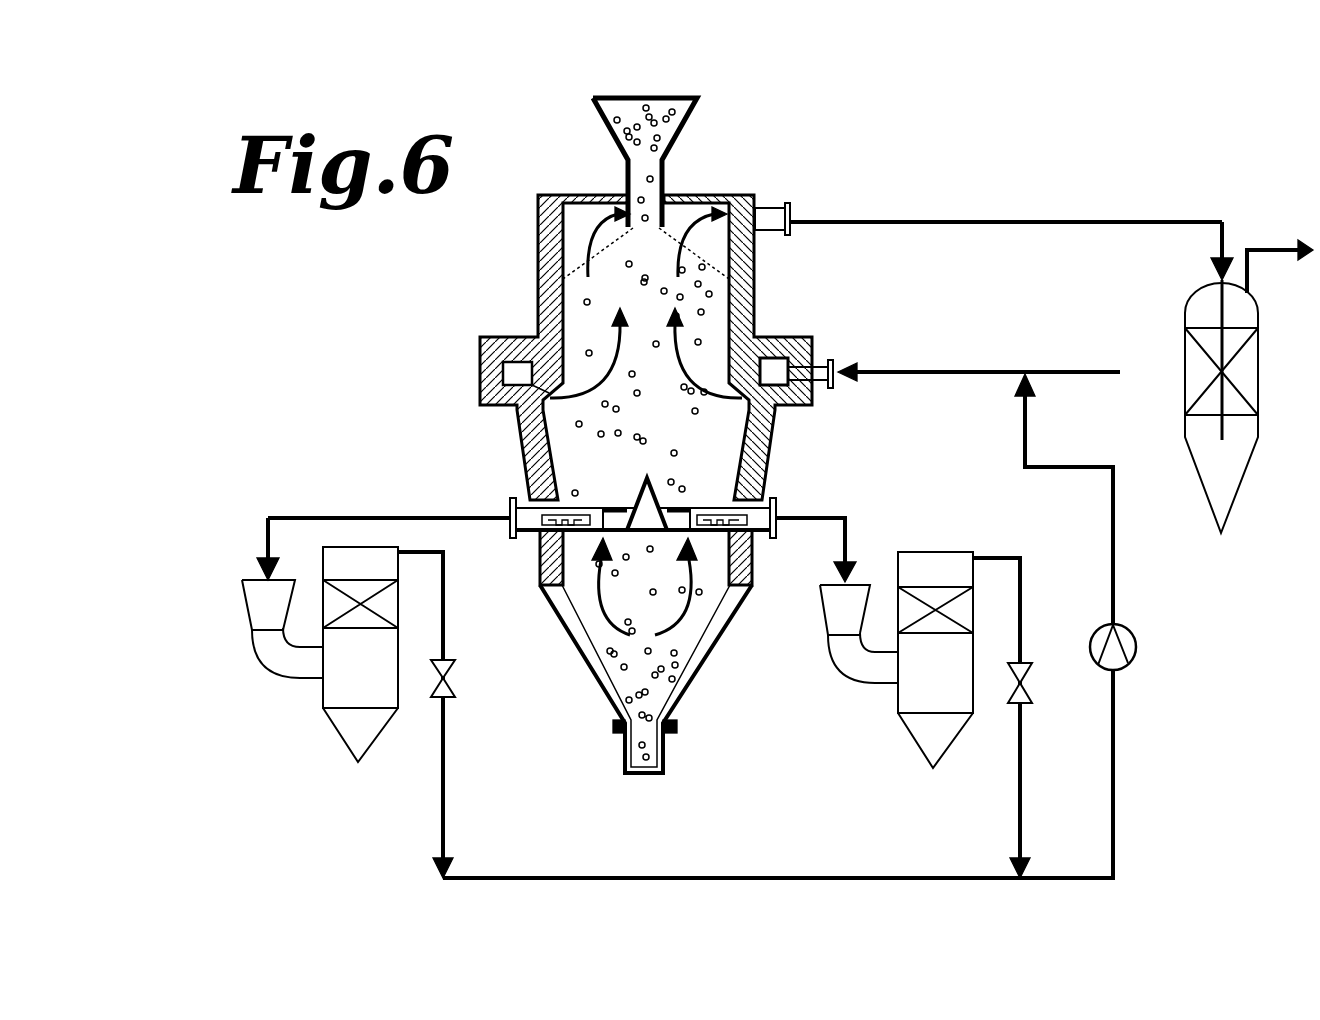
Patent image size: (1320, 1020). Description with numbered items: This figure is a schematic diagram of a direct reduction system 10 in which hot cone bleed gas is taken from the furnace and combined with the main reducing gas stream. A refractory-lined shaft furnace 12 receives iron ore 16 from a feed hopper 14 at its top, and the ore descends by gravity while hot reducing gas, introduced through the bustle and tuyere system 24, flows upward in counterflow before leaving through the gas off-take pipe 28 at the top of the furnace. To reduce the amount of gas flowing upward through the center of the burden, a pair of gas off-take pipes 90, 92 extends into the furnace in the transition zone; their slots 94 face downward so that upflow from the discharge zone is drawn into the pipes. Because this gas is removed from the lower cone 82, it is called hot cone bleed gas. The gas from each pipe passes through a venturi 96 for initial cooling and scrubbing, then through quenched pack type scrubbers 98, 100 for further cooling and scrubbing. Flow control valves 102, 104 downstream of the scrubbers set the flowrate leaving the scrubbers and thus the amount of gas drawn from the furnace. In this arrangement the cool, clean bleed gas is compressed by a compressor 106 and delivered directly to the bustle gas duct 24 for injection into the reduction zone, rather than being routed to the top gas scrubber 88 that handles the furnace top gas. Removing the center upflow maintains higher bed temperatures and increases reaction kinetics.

The system 10 is at (753, 108).
The shaft furnace 12 is at (540, 250).
The feed hopper 14 is at (608, 127).
The iron ore 16 is at (632, 110).
The bustle and tuyere system 24 is at (775, 365).
The gas off-take pipe 28 is at (767, 210).
The lower cone 82 is at (688, 698).
The top gas scrubber 88 is at (1238, 462).
The gas off-take pipe 90 is at (523, 500).
The gas off-take pipe 92 is at (763, 500).
The slots 94 is at (748, 515).
The venturi 96 is at (260, 600).
The quenched pack type scrubber 98 is at (340, 738).
The quenched pack type scrubber 100 is at (943, 743).
The flow control valve 102 is at (437, 695).
The flow control valve 104 is at (1032, 658).
The compressor 106 is at (1115, 653).